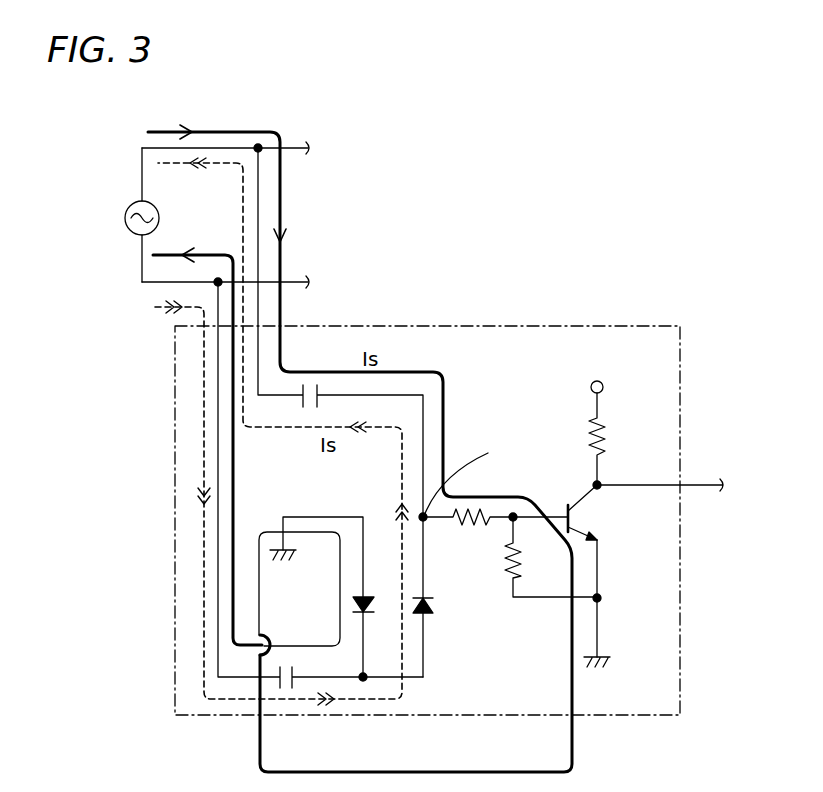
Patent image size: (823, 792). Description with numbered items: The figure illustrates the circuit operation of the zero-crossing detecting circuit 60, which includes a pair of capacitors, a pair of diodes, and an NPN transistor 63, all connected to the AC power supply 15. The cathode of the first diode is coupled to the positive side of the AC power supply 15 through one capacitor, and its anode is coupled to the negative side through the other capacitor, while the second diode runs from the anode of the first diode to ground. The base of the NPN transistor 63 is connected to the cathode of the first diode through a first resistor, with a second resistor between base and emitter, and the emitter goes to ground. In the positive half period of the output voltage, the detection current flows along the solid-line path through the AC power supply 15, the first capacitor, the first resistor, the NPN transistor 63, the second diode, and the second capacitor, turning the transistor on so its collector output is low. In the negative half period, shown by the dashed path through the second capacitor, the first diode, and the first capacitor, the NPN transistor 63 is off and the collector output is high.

The AC power supply 15 is at (136, 203).
The zero-crossing detecting circuit 60 is at (449, 431).
The NPN transistor 63 is at (583, 497).